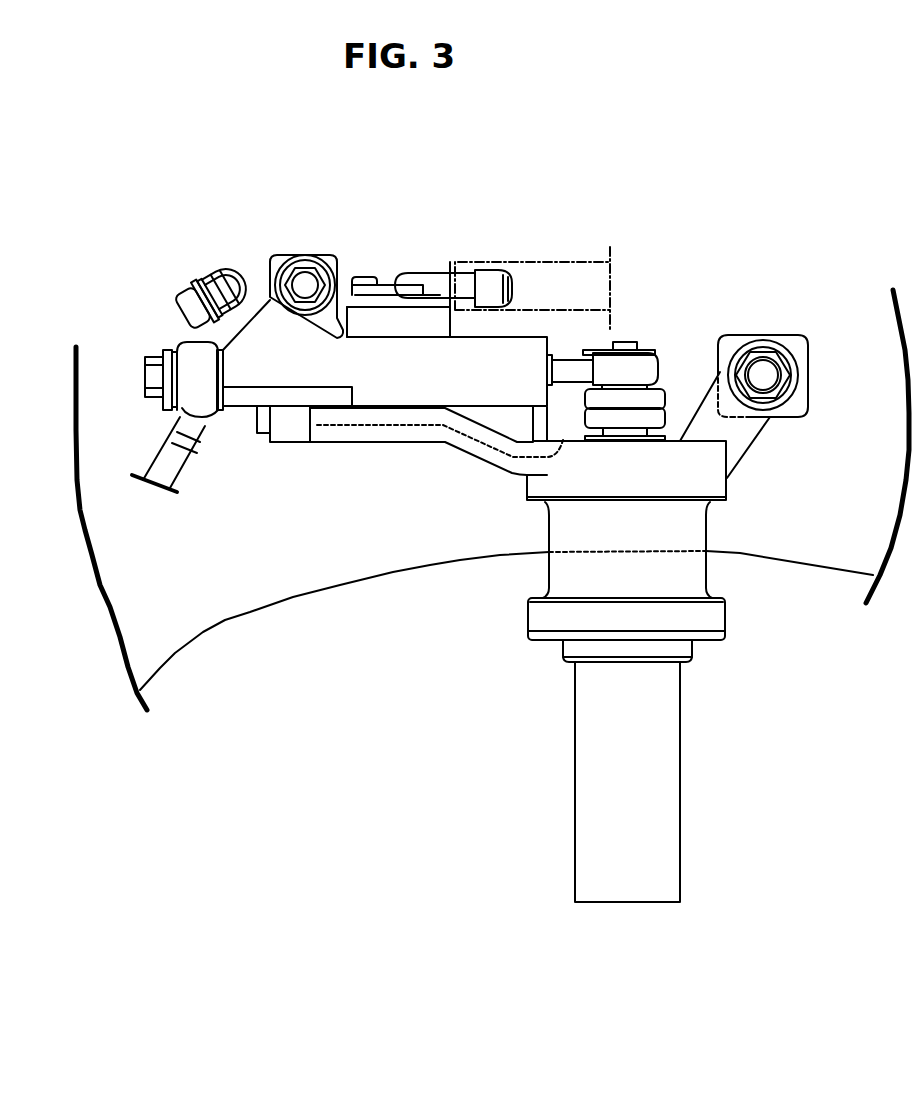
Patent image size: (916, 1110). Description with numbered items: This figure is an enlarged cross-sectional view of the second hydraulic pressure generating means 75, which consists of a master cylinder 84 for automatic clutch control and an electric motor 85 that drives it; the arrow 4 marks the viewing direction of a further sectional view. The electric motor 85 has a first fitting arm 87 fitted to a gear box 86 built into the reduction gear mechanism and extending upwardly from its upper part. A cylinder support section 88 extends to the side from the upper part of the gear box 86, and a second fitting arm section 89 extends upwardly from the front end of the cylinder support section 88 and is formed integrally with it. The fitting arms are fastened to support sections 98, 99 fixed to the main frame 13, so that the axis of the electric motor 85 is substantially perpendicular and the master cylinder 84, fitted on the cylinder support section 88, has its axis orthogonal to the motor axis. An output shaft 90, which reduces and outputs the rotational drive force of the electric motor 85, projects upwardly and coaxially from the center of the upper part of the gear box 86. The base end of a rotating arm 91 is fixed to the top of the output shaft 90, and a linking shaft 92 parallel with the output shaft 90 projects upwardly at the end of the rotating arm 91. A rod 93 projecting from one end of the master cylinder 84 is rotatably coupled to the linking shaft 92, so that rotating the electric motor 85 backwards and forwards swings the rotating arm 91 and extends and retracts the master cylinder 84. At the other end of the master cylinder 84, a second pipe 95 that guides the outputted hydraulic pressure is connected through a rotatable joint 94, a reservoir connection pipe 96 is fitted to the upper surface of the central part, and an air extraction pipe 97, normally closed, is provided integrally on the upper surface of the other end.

The section line of FIG. 4 is at (590, 135).
The main frame 13 is at (834, 547).
The second hydraulic pressure generating means 75 is at (478, 486).
The master cylinder 84 is at (520, 337).
The electric motor 85 is at (642, 768).
The gear box 86 is at (703, 482).
The first fitting arm 87 is at (744, 436).
The cylinder support section 88 is at (377, 430).
The second fitting arm section 89 is at (287, 253).
The output shaft 90 is at (623, 441).
The rotating arm 91 is at (655, 398).
The linking shaft 92 is at (625, 338).
The rod 93 is at (571, 366).
The rotatable joint 94 is at (193, 350).
The second pipe 95 is at (167, 457).
The reservoir connection pipe 96 is at (450, 262).
The air extraction pipe 97 is at (258, 300).
The support section 98 is at (795, 342).
The support section 99 is at (330, 253).